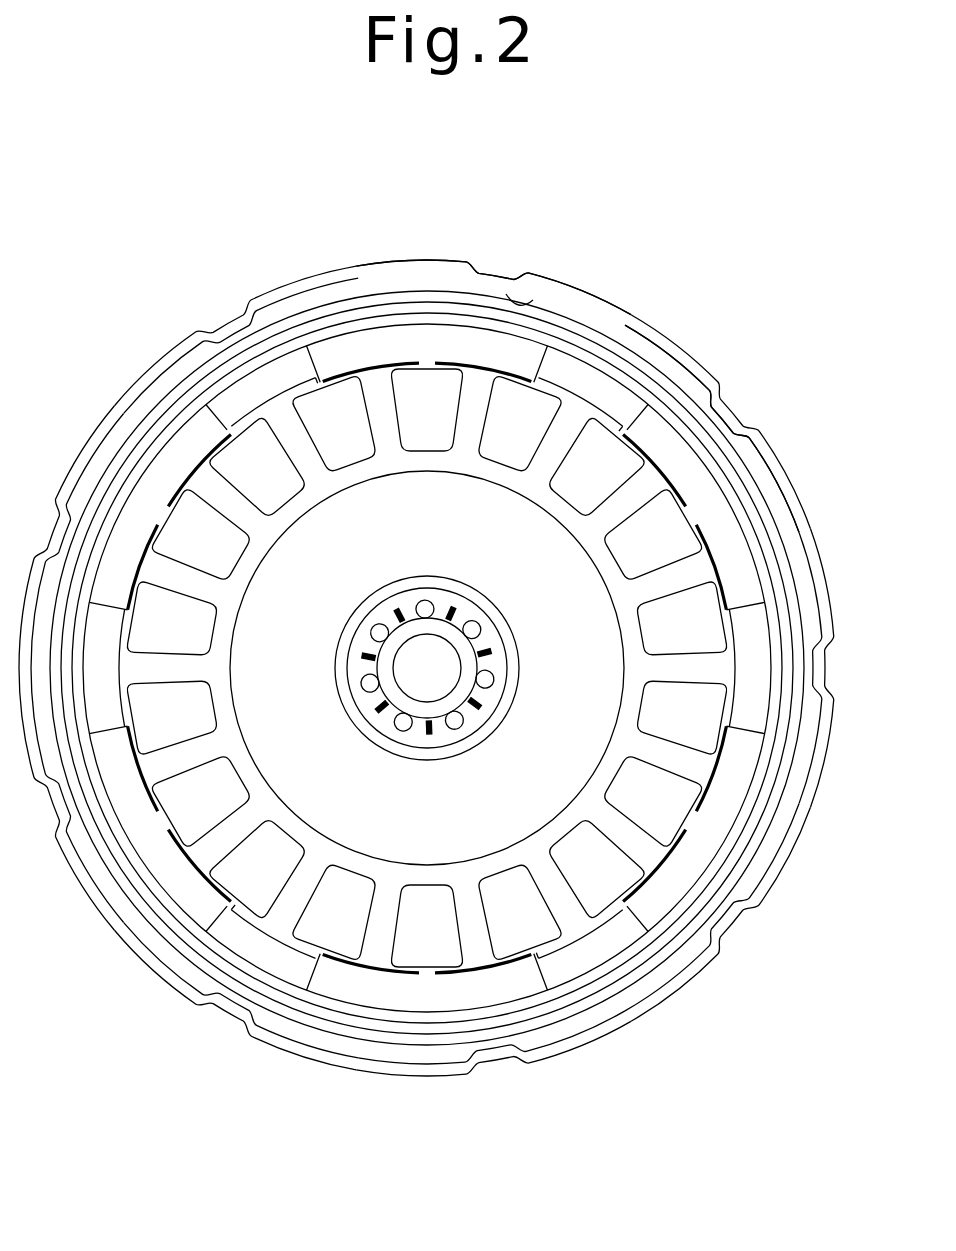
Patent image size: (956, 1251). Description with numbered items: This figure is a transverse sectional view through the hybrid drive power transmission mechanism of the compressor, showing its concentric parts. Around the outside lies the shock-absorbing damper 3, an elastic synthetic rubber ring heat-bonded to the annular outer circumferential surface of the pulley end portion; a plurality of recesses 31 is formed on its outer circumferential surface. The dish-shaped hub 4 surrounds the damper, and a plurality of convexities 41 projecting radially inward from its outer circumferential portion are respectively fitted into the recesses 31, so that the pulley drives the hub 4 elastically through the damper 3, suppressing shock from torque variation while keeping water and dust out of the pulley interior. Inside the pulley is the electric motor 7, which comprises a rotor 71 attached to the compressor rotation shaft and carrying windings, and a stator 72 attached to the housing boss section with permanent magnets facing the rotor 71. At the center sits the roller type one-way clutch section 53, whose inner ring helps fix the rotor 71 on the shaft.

The shock-absorbing damper 3 is at (625, 332).
The recess 31 is at (736, 418).
The dish-shaped hub 4 is at (411, 262).
The convexity 41 is at (546, 302).
The one-way clutch section 53 is at (367, 718).
The electric motor 7 is at (469, 701).
The rotor 71 is at (712, 769).
The stator 72 is at (709, 872).